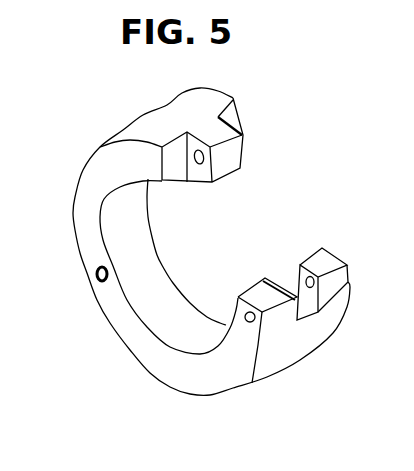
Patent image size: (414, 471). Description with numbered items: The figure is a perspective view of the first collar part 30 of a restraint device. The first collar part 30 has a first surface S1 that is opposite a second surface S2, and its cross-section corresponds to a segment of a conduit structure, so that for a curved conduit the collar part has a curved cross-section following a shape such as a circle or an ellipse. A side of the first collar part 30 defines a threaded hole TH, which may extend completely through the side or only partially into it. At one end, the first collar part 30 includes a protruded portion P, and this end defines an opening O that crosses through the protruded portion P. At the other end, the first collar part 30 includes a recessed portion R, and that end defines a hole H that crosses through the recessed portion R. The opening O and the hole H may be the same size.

The first collar part 30 is at (80, 124).
The second surface S2 is at (164, 125).
The first surface S1 is at (157, 291).
The protruded portion P is at (242, 172).
The opening O is at (198, 161).
The recessed portion R is at (288, 273).
The hole H is at (250, 323).
The threaded hole TH is at (96, 280).